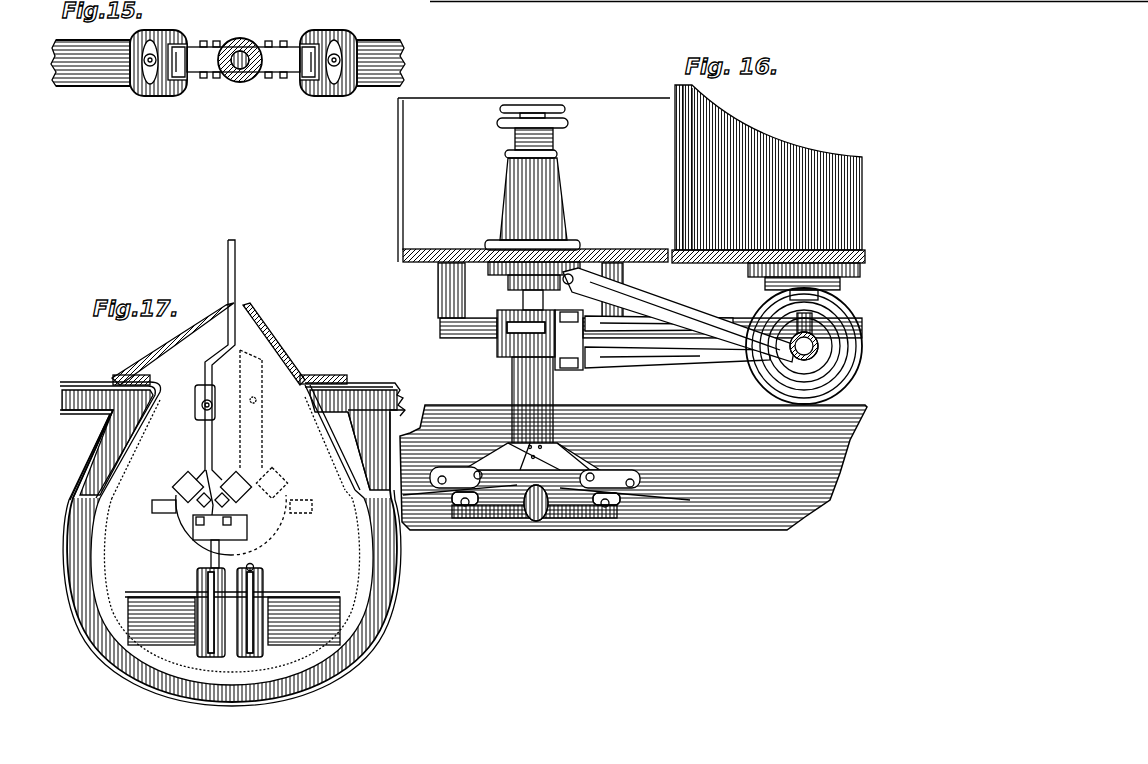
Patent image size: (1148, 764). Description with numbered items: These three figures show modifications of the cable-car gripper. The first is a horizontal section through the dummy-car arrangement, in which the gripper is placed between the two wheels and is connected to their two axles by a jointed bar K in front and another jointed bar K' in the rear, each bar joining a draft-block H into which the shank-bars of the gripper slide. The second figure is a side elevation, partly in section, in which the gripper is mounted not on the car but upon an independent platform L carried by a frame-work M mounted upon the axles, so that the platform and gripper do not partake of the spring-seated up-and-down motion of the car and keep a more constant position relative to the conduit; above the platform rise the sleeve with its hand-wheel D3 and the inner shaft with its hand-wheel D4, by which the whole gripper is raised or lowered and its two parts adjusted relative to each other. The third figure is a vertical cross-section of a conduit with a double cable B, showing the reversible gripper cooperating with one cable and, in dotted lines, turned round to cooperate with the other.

In FIG. 15, the jointed bar K is at (90, 63).
In FIG. 15, the jointed bar K' is at (391, 63).
In FIG. 15, the draft-block H is at (160, 90).
In FIG. 16, the hand-wheel D4 is at (566, 110).
In FIG. 16, the hand-wheel D3 is at (568, 125).
In FIG. 16, the independent platform L is at (634, 244).
In FIG. 16, the frame-work M is at (760, 323).
In FIG. 17, the cable B is at (208, 560).